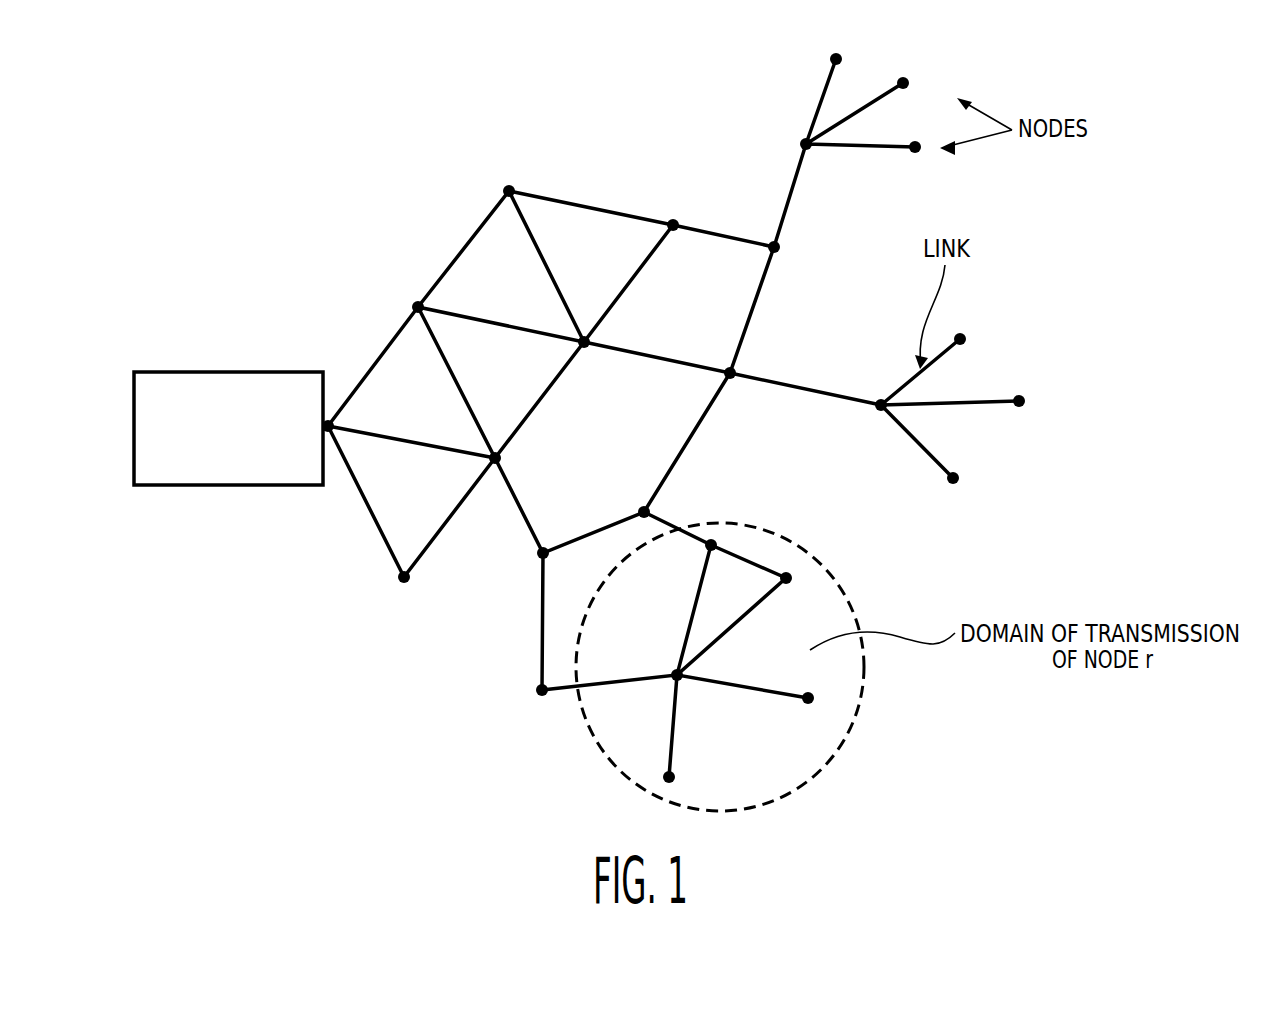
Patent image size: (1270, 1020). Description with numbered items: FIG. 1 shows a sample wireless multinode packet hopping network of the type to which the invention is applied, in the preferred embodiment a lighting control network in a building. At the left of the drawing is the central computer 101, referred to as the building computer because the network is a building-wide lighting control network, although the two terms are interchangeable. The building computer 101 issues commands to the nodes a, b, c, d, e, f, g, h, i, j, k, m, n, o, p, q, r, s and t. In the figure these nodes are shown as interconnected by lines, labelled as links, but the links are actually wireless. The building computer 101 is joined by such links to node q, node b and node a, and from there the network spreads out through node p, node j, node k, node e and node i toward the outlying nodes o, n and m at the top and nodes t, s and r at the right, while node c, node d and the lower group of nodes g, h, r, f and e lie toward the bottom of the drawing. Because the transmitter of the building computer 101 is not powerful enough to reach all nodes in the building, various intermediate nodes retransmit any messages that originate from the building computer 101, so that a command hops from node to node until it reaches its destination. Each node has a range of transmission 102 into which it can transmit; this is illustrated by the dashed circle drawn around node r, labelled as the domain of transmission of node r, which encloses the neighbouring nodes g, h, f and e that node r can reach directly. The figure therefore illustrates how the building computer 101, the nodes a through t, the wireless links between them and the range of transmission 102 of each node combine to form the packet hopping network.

The central computer 101 is at (213, 372).
The range of transmission 102 is at (828, 763).
The node a is at (396, 580).
The node b is at (496, 439).
The node c is at (546, 540).
The node d is at (533, 694).
The node e is at (721, 512).
The node f is at (815, 699).
The node g is at (701, 549).
The node h is at (793, 579).
The node i is at (728, 358).
The node j is at (584, 356).
The node k is at (672, 209).
The node m is at (916, 162).
The node n is at (913, 91).
The node o is at (844, 57).
The node p is at (506, 177).
The node q is at (418, 320).
The node r is at (823, 576).
The node s is at (1033, 419).
The node t is at (980, 348).